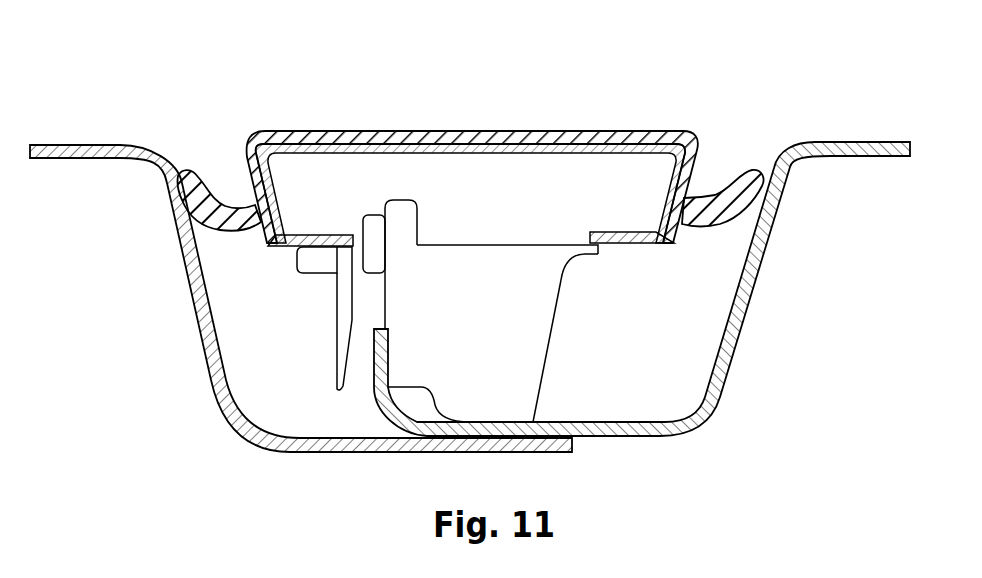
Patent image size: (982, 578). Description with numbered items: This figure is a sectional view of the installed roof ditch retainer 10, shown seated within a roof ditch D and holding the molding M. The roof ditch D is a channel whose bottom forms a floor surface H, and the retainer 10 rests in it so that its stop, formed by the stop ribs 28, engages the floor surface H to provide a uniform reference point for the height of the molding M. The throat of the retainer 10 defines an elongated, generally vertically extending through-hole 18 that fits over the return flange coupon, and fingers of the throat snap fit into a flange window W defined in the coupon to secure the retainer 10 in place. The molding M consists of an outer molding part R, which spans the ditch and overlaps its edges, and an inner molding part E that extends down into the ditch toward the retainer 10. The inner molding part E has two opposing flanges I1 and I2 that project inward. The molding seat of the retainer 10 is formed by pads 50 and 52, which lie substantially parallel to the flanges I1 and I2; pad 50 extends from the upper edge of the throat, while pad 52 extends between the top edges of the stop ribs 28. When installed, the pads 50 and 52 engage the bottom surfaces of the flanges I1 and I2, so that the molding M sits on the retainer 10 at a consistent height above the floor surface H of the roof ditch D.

The roof ditch retainer 10 is at (588, 331).
The through-hole 18 is at (353, 318).
The stop ribs 28 is at (523, 383).
The pad 50 is at (313, 259).
The pad 52 is at (590, 253).
The molding M is at (622, 129).
The inner molding part E is at (397, 142).
The outer molding part R is at (230, 208).
The flange window W is at (375, 273).
The roof ditch D is at (667, 395).
The floor surface H is at (612, 422).
The flange I1 is at (327, 234).
The flange I2 is at (612, 232).